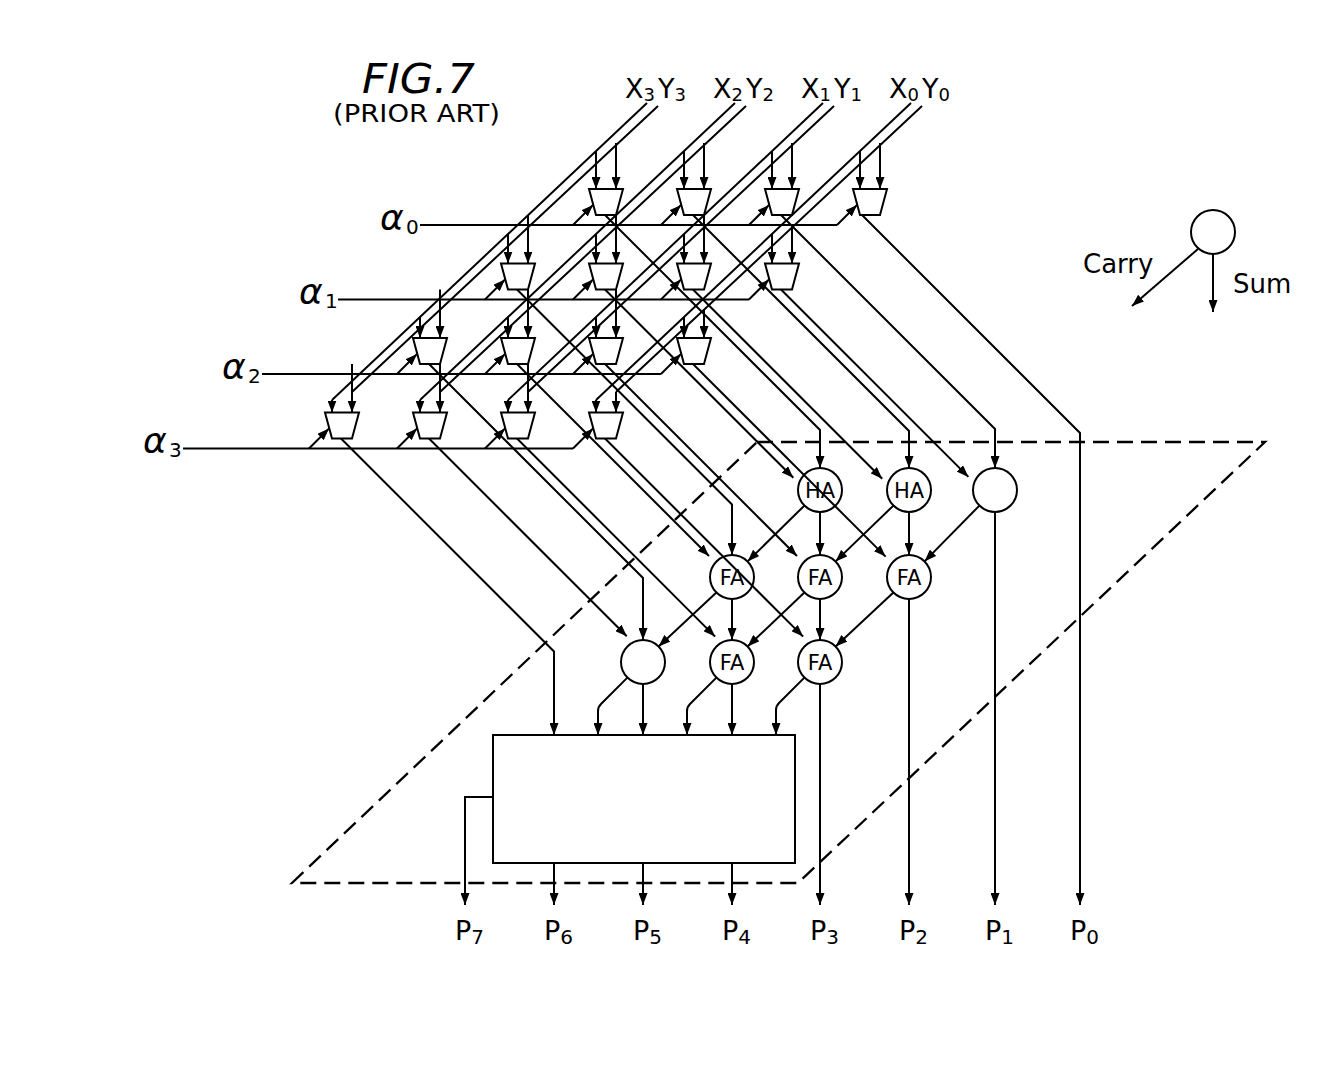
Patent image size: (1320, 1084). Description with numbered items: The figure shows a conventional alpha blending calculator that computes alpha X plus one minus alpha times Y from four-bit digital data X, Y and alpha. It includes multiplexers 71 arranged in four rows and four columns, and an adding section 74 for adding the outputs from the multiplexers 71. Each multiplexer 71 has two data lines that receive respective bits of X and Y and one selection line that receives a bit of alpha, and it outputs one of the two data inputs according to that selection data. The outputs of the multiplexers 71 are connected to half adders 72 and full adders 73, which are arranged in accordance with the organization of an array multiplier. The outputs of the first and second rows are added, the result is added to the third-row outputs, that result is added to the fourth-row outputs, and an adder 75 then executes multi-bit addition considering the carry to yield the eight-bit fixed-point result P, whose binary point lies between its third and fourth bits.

The multiplexer 71 is at (884, 206).
The half adder 72 is at (1017, 497).
The full adder 73 is at (623, 665).
The adding section 74 is at (503, 680).
The adder 75 is at (493, 775).